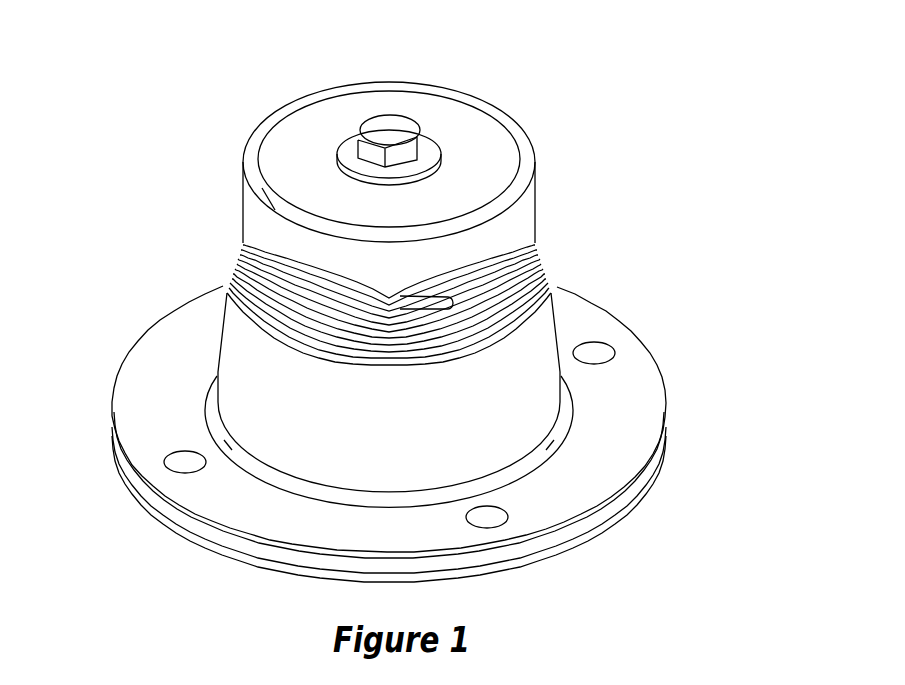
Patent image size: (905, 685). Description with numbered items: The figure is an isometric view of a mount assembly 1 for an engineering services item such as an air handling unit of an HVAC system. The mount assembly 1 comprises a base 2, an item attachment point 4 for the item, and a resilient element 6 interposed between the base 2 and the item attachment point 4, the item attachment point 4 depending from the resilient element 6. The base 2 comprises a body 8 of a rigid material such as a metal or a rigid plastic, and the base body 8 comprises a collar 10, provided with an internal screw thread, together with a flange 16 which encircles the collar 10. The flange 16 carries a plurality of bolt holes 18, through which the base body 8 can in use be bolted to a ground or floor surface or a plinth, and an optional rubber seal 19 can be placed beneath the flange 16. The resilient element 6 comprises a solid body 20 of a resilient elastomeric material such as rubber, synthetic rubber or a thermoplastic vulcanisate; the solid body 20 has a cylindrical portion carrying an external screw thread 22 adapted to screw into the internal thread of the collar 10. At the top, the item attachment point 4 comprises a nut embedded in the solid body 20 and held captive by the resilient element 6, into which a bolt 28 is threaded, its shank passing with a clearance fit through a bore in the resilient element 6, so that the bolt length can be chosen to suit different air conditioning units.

The mount assembly 1 is at (562, 92).
The base 2 is at (684, 356).
The item attachment point 4 is at (405, 108).
The resilient element 6 is at (537, 191).
The base body 8 is at (668, 420).
The collar 10 is at (538, 330).
The flange 16 is at (150, 400).
The bolt holes 18 is at (601, 350).
The rubber seal 19 is at (187, 533).
The solid body 20 is at (262, 187).
The external screw thread 22 is at (228, 280).
The bolt 28 is at (381, 128).